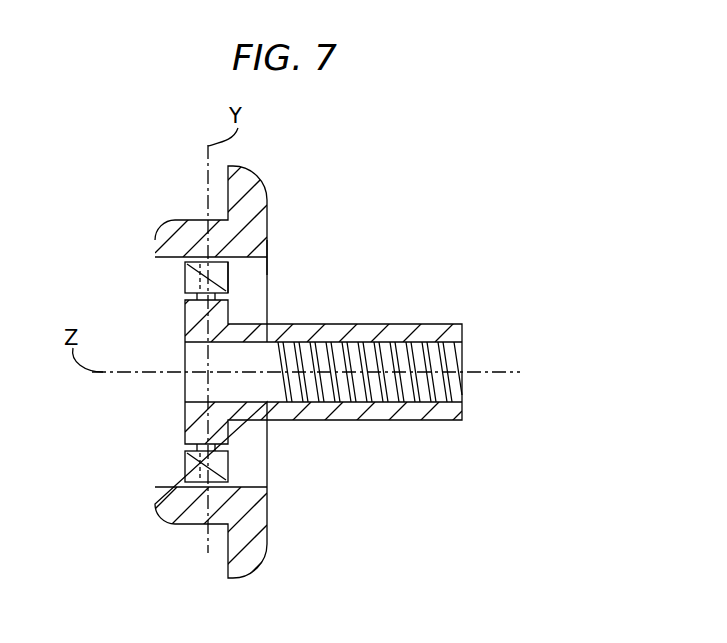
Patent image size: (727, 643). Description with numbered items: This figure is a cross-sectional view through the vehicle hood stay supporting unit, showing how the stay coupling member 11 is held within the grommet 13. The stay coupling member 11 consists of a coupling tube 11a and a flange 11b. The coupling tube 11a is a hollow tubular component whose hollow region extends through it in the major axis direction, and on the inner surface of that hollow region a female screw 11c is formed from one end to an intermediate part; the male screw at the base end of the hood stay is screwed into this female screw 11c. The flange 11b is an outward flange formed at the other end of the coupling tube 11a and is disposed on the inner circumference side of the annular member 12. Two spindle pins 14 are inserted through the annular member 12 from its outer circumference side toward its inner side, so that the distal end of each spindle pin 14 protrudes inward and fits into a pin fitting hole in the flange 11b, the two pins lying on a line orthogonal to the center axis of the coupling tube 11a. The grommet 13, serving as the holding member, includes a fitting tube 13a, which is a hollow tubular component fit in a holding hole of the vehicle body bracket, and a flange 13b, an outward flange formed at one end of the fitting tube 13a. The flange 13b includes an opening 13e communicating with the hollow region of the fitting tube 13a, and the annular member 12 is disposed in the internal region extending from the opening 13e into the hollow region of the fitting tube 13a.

The stay coupling member 11 is at (407, 485).
The coupling tube 11a is at (385, 413).
The flange 11b is at (227, 432).
The female screw 11c is at (427, 386).
The annular member 12 is at (228, 278).
The grommet 13 is at (345, 145).
The fitting tube 13a is at (256, 200).
The flange 13b is at (187, 215).
The opening 13e is at (268, 257).
The spindle pin 14 is at (232, 288).